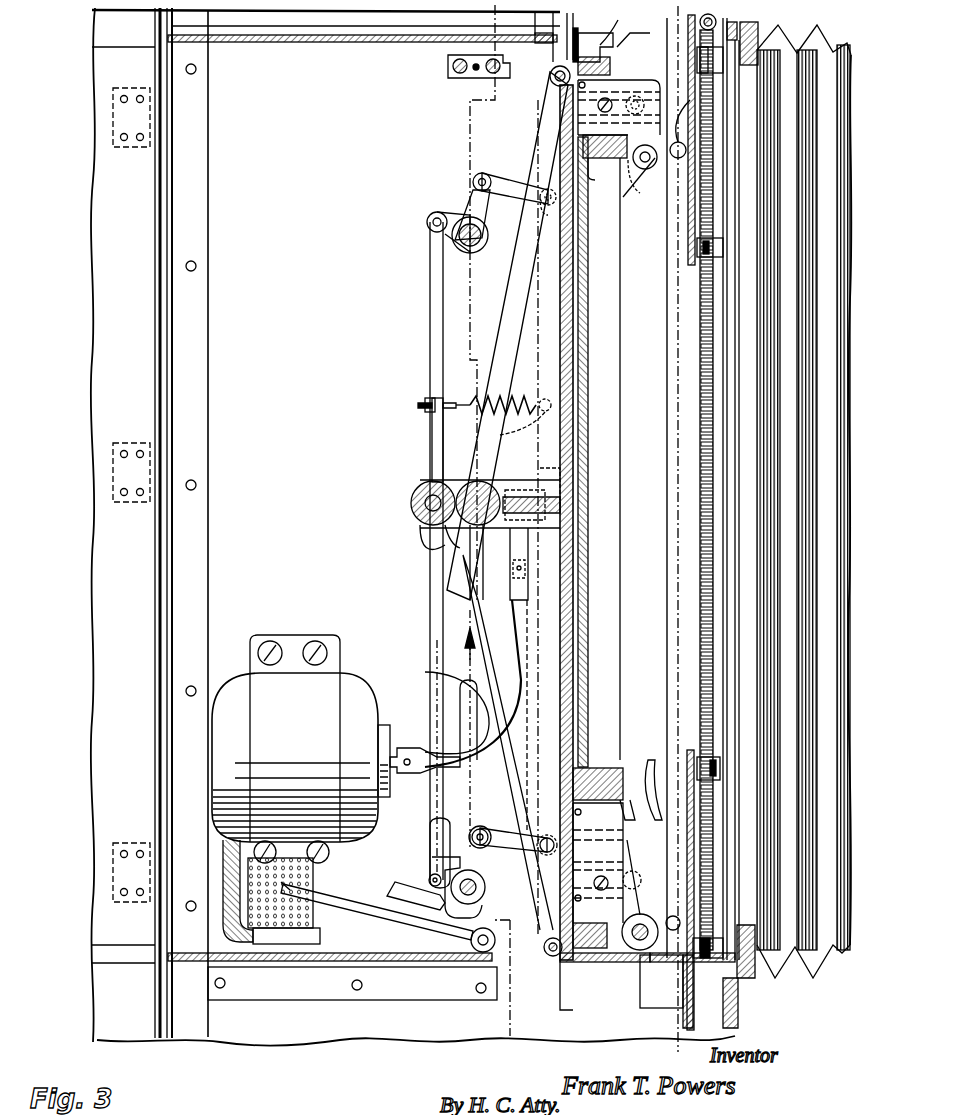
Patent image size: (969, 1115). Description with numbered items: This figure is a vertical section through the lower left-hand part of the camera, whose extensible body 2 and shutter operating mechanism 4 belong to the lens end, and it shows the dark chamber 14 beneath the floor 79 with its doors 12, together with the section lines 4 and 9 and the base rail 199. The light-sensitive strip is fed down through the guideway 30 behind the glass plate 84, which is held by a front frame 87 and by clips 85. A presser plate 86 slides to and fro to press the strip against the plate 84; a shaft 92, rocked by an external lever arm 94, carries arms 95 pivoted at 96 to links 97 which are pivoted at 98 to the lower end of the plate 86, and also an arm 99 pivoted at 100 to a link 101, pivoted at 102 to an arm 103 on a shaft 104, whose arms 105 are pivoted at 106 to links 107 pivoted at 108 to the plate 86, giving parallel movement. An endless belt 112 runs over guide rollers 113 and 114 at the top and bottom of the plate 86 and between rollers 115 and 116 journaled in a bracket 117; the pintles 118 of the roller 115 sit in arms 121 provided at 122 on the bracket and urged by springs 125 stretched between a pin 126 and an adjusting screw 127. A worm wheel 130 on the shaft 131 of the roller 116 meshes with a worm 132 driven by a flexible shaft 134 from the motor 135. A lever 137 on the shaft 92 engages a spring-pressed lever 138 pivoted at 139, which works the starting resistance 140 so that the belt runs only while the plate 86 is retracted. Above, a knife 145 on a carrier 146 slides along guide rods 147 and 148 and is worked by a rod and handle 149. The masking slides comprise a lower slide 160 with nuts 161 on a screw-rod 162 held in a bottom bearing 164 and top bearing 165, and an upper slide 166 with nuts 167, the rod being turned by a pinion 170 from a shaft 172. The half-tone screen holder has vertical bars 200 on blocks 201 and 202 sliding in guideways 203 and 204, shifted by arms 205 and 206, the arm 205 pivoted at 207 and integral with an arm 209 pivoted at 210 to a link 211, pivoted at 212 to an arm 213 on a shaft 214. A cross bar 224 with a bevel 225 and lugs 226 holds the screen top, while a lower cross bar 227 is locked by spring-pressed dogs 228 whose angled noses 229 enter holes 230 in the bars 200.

The extensible and contractible body 2 is at (826, 950).
The shutter operating mechanism 4 is at (487, 23).
The section line 9 is at (670, 21).
The doors 12 is at (98, 115).
The dark chamber 14 is at (232, 222).
The guideway 30 is at (550, 22).
The floor 79 is at (276, 56).
The plate of glass or light-transmitting material 84 is at (575, 358).
The clips or strips 85 is at (585, 980).
The presser plate 86 is at (570, 298).
The frame 87 is at (640, 28).
The shaft 92 is at (480, 898).
The lever arm 94 is at (458, 700).
The arms 95 is at (478, 862).
The pivot 96 is at (482, 828).
The links 97 is at (495, 826).
The pivot 98 is at (547, 835).
The arm 99 is at (432, 845).
The pivot 100 is at (428, 880).
The link 101 is at (440, 812).
The pivot 102 is at (427, 224).
The arm 103 is at (455, 225).
The shaft 104 is at (485, 246).
The arms 105 is at (475, 200).
The pivot 106 is at (480, 173).
The links 107 is at (500, 183).
The pivot 108 is at (540, 212).
The endless belt 112 is at (445, 322).
The guide roller 113 is at (552, 82).
The guide roller 114 is at (550, 958).
The spring-pressed roller 115 is at (412, 500).
The roller 116 is at (486, 540).
The bracket 117 is at (445, 535).
The pintles 118 is at (425, 510).
The arms 121 is at (432, 446).
The pivot 122 is at (428, 530).
The springs 125 is at (498, 396).
The pin 126 is at (515, 440).
The adjusting screw 127 is at (418, 406).
The worm wheel 130 is at (445, 555).
The shaft 131 is at (484, 482).
The worm 132 is at (545, 465).
The flexible shaft 134 is at (470, 727).
The motor 135 is at (340, 688).
The lever 137 is at (445, 925).
The spring-pressed lever 138 is at (360, 903).
The pivot 139 is at (483, 953).
The starting resistance 140 is at (320, 940).
The knife 145 is at (590, 62).
The carrier 146 is at (448, 62).
The guide rod 147 is at (455, 73).
The guide rod 148 is at (490, 78).
The actuating rod and handle 149 is at (476, 78).
The lower masking slide 160 is at (700, 818).
The nuts 161 is at (720, 768).
The screw-rod 162 is at (702, 324).
The bottom bearing 164 is at (755, 970).
The top bearing 165 is at (770, 26).
The upper masking slide 166 is at (697, 212).
The nuts 167 is at (725, 252).
The pinion 170 is at (722, 24).
The shaft 172 is at (650, 40).
The base rail 199 is at (398, 963).
The vertically-disposed bars 200 is at (622, 416).
The block 201 is at (668, 66).
The block 202 is at (650, 880).
The guideway 203 is at (612, 100).
The guideway 204 is at (636, 872).
The arm 205 is at (636, 195).
The arm 206 is at (596, 960).
The pivot 207 is at (652, 168).
The arm 209 is at (690, 128).
The pivot 210 is at (686, 150).
The link 211 is at (668, 452).
The pivot 212 is at (700, 912).
The arm 213 is at (700, 890).
The shaft 214 is at (647, 980).
The cross bar 224 is at (590, 132).
The bevel 225 is at (604, 173).
The lugs 226 is at (585, 150).
The lower cross bar 227 is at (606, 770).
The spring-pressed dogs 228 is at (648, 760).
The angled nose 229 is at (630, 812).
The holes 230 is at (610, 832).